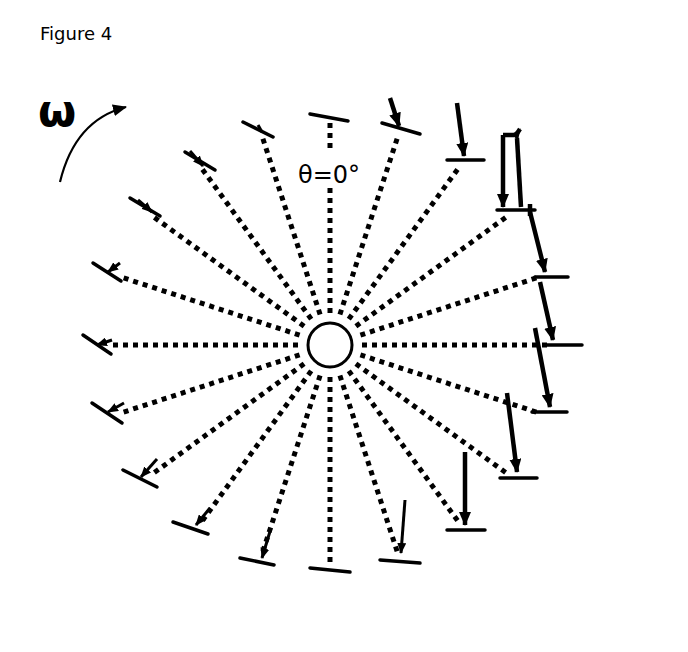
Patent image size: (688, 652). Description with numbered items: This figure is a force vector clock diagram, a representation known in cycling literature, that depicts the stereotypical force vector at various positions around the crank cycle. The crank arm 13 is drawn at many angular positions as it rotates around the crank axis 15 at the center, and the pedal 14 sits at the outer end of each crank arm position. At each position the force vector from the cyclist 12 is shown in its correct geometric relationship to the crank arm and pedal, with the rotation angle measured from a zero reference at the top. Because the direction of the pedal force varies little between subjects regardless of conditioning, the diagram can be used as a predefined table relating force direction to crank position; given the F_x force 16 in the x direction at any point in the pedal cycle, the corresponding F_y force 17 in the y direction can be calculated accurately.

The force vector from the cyclist 12 is at (556, 372).
The crank arm 13 is at (238, 478).
The pedal 14 is at (142, 488).
The crank axis 15 is at (326, 345).
The F_x force 16 is at (500, 203).
The F_y force 17 is at (522, 141).